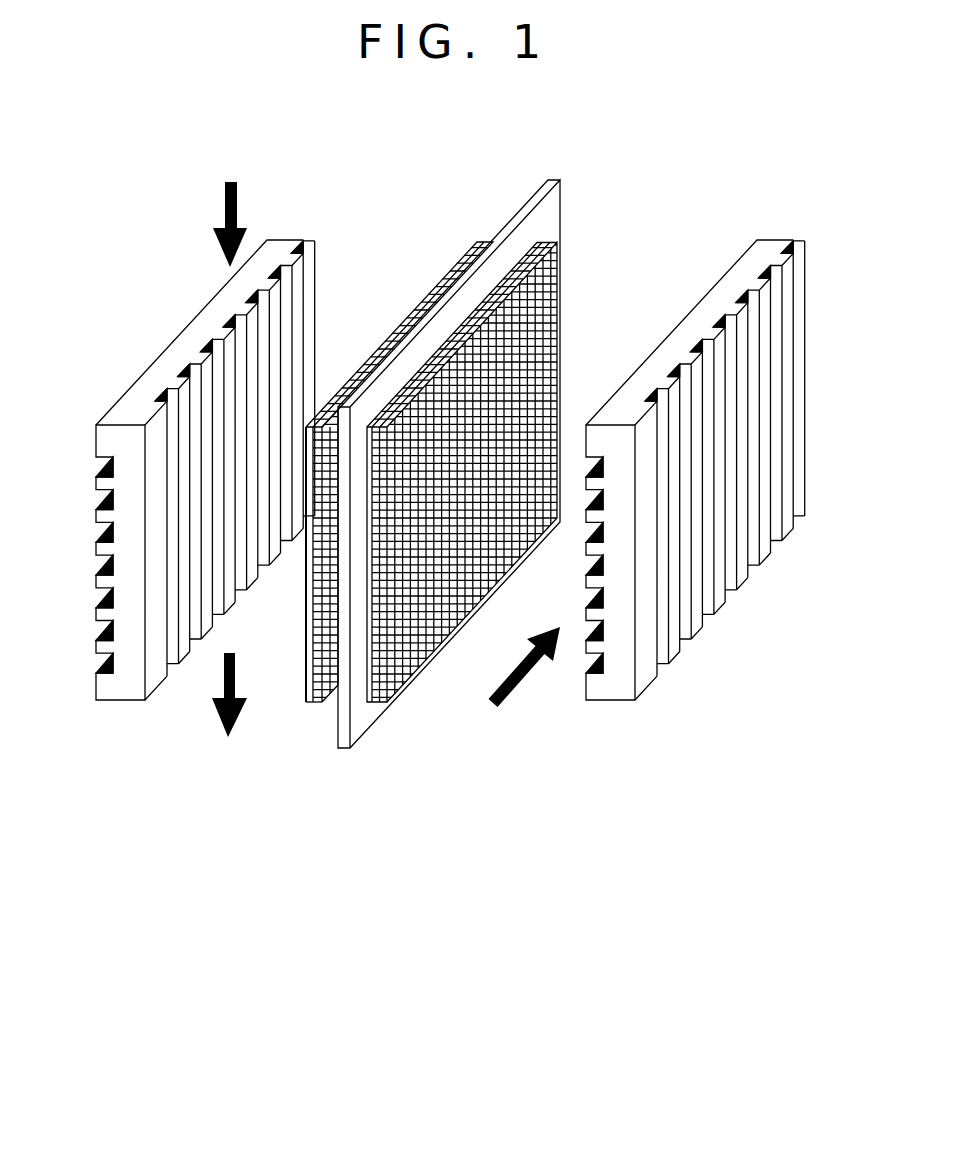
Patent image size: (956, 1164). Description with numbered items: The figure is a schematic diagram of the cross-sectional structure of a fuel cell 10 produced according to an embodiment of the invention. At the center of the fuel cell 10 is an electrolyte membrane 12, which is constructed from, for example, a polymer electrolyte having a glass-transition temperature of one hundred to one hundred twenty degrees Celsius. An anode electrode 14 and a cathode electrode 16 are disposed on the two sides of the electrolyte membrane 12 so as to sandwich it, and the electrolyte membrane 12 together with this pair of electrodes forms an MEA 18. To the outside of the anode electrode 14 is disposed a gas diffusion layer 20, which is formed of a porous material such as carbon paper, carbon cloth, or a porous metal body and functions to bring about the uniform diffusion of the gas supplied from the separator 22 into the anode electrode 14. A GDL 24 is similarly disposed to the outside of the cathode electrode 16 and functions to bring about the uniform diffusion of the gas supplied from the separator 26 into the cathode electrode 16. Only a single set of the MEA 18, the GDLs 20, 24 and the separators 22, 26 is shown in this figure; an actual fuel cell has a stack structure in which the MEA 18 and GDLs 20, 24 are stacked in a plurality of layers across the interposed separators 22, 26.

The fuel cell 10 is at (181, 1001).
The electrolyte membrane 12 is at (340, 748).
The anode electrode 14 is at (310, 703).
The cathode electrode 16 is at (368, 703).
The MEA 18 is at (425, 885).
The gas diffusion layer 20 is at (303, 690).
The separator 22 is at (122, 702).
The GDL 24 is at (420, 673).
The separator 26 is at (633, 700).